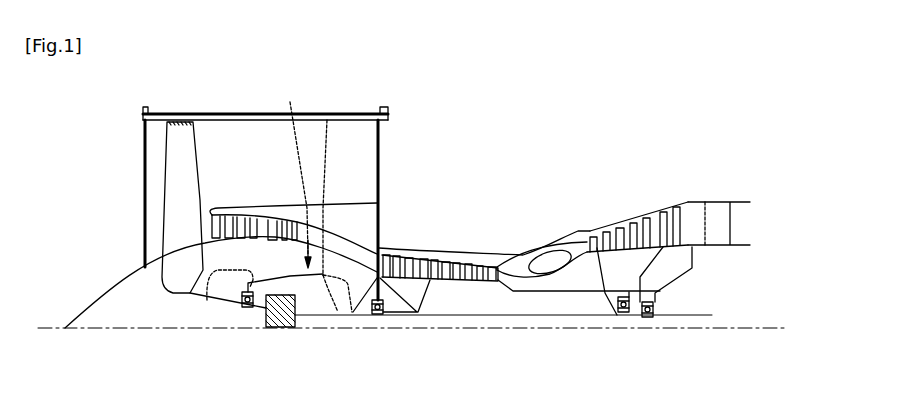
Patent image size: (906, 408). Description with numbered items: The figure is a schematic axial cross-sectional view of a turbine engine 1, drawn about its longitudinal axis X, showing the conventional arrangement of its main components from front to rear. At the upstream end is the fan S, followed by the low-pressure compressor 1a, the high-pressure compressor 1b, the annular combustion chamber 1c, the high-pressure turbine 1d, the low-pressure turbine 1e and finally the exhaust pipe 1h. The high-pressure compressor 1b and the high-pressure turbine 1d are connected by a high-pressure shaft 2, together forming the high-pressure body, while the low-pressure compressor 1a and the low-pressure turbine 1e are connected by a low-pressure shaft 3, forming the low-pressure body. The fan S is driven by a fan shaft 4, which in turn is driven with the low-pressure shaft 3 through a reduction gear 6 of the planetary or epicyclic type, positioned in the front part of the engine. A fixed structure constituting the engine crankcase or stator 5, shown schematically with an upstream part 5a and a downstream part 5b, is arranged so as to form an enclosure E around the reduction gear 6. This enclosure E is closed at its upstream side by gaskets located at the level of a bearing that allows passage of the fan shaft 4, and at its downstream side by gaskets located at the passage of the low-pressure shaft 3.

The turbine engine 1 is at (481, 179).
The low-pressure compressor 1a is at (227, 208).
The high-pressure compressor 1b is at (407, 257).
The annular combustion chamber 1c is at (545, 258).
The high-pressure turbine 1d is at (588, 241).
The low-pressure turbine 1e is at (692, 212).
The exhaust pipe 1h is at (740, 220).
The fan S is at (175, 168).
The stator 5 is at (306, 180).
The upstream part 5a is at (210, 273).
The downstream part 5b is at (340, 313).
The fan shaft 4 is at (233, 303).
The reduction gear 6 is at (277, 327).
The enclosure E is at (307, 285).
The rotational axis X is at (50, 328).
The low-pressure shaft 3 is at (460, 316).
The high-pressure shaft 2 is at (540, 291).